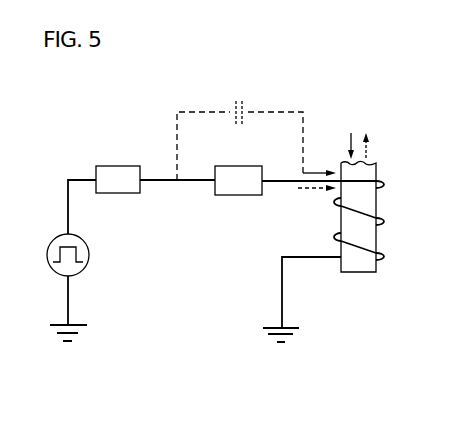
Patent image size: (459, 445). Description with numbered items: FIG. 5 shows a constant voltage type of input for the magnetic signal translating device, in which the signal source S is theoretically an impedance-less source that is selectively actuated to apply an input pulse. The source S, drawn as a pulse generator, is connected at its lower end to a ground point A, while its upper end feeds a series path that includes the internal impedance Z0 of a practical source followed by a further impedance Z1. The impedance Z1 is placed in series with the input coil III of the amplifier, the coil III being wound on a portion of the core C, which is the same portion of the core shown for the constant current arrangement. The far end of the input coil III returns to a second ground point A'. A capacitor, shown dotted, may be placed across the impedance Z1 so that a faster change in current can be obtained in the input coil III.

The internal impedance Z0 is at (118, 180).
The series impedance Z1 is at (238, 180).
The signal source S is at (72, 257).
The ground point A is at (68, 318).
The ground point A' is at (302, 308).
The core C is at (368, 267).
The input coil III is at (420, 225).